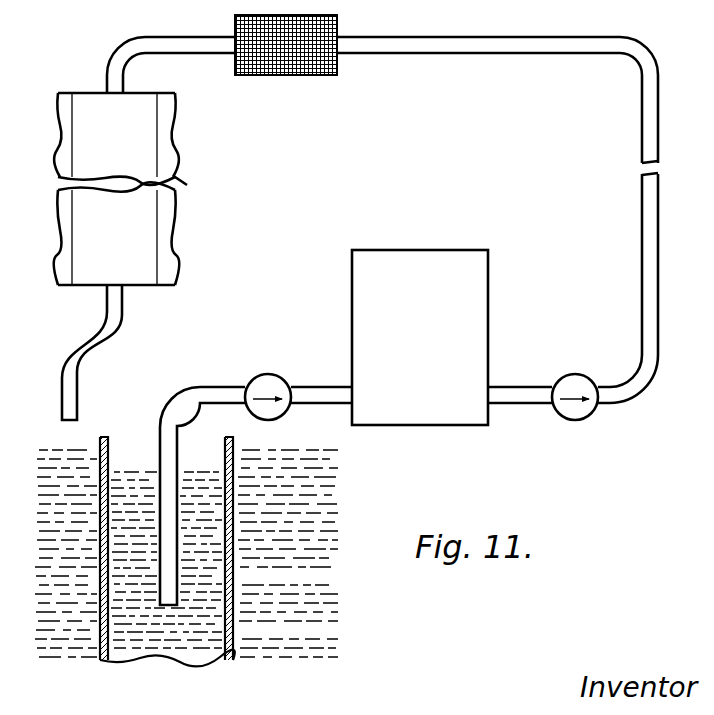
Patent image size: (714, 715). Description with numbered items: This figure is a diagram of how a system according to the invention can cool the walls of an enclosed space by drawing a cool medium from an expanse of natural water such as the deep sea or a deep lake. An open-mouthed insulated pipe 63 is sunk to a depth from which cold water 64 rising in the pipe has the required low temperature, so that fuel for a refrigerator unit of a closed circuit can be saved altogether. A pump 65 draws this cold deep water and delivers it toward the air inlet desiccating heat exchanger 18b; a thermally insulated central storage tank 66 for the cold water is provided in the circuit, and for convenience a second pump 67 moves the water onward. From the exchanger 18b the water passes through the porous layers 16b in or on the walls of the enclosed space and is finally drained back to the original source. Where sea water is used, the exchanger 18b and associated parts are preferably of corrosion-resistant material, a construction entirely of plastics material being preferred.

The porous layers 16b is at (138, 160).
The air inlet desiccating heat exchanger 18b is at (273, 68).
The open-mouthed insulated pipe 63 is at (237, 573).
The cold water 64 is at (207, 618).
The pump 65 is at (273, 374).
The thermally insulated central storage tank 66 is at (426, 262).
The second pump 67 is at (588, 374).